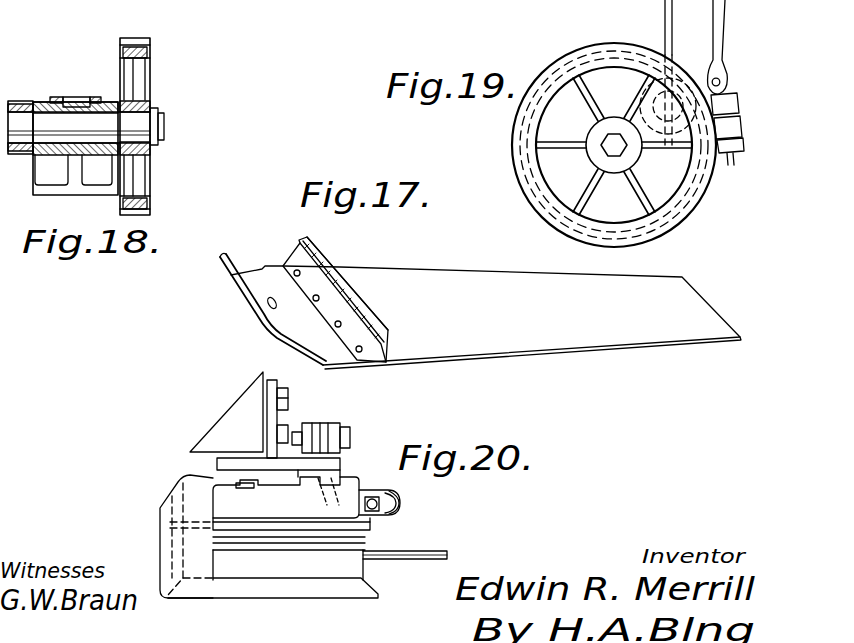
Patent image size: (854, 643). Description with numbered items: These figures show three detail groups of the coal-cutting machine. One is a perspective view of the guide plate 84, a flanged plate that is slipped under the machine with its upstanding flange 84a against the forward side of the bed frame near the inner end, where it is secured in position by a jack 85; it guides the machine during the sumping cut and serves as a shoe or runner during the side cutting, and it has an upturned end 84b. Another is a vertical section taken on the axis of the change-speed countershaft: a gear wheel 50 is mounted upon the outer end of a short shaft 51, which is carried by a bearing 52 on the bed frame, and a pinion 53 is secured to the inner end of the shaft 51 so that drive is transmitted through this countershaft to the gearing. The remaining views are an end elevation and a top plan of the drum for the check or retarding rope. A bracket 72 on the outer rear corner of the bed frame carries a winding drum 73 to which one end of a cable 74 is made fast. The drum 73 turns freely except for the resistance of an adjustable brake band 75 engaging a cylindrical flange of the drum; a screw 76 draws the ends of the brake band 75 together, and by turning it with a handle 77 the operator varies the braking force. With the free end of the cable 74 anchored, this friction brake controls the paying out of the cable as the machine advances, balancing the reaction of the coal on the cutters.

In FIG. 18, the gear wheel 50 is at (148, 213).
In FIG. 18, the short shaft 51 is at (48, 122).
In FIG. 18, the bearing 52 is at (104, 103).
In FIG. 18, the pinion 53 is at (14, 111).
In FIG. 19, the winding drum 73 is at (699, 200).
In FIG. 20, the winding drum 73 is at (296, 584).
In FIG. 19, the screw 76 is at (733, 160).
In FIG. 19, the handle 77 is at (722, 33).
In FIG. 17, the upstanding flange 84a is at (320, 268).
In FIG. 17, the upturned end 84b is at (228, 262).
In FIG. 17, the jack 85 is at (313, 336).
In FIG. 20, the bracket 72 is at (285, 415).
In FIG. 20, the cable 74 is at (425, 559).
In FIG. 20, the adjustable brake band 75 is at (280, 528).
In FIG. 20, the guide plate 84 is at (295, 383).